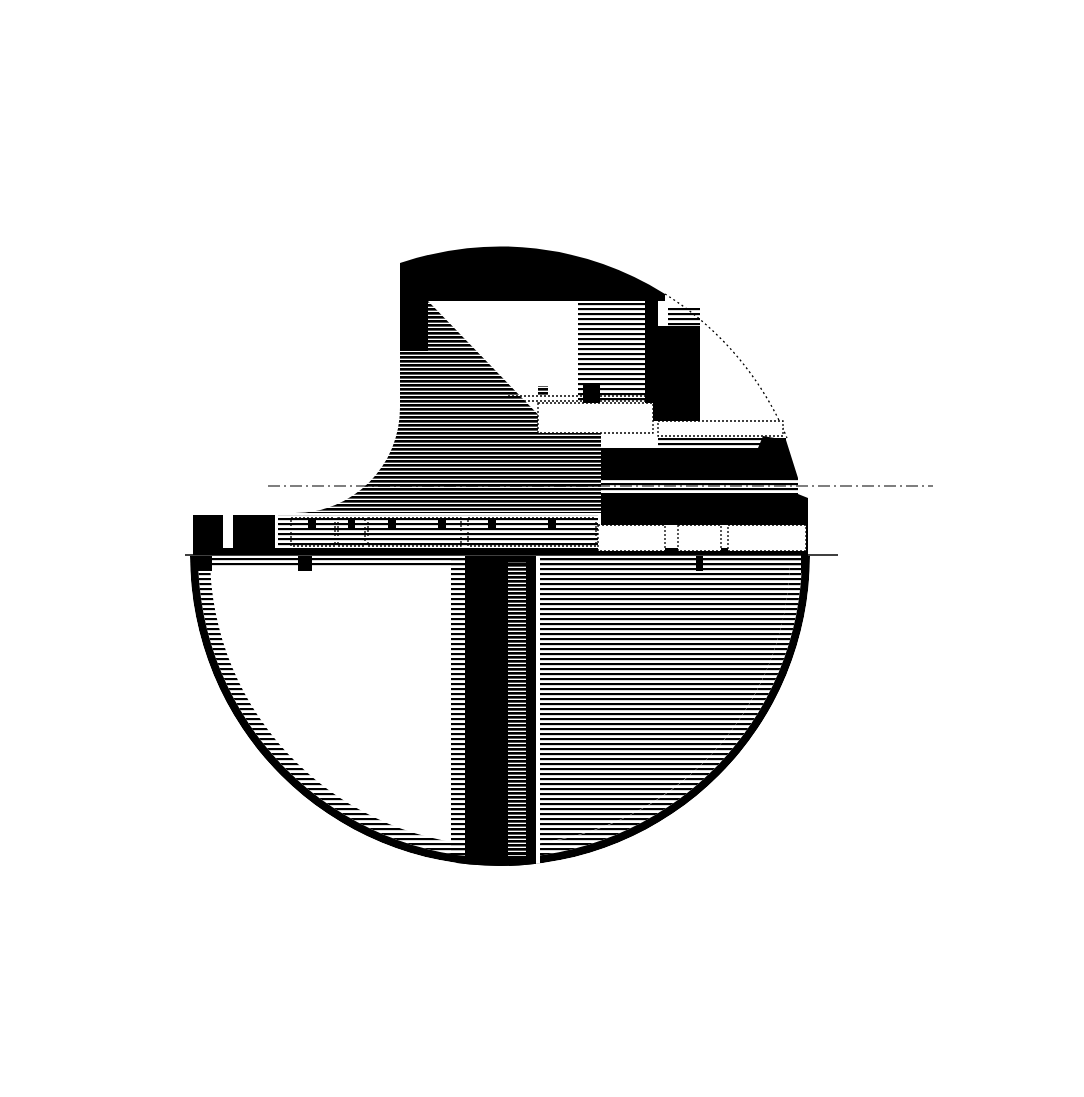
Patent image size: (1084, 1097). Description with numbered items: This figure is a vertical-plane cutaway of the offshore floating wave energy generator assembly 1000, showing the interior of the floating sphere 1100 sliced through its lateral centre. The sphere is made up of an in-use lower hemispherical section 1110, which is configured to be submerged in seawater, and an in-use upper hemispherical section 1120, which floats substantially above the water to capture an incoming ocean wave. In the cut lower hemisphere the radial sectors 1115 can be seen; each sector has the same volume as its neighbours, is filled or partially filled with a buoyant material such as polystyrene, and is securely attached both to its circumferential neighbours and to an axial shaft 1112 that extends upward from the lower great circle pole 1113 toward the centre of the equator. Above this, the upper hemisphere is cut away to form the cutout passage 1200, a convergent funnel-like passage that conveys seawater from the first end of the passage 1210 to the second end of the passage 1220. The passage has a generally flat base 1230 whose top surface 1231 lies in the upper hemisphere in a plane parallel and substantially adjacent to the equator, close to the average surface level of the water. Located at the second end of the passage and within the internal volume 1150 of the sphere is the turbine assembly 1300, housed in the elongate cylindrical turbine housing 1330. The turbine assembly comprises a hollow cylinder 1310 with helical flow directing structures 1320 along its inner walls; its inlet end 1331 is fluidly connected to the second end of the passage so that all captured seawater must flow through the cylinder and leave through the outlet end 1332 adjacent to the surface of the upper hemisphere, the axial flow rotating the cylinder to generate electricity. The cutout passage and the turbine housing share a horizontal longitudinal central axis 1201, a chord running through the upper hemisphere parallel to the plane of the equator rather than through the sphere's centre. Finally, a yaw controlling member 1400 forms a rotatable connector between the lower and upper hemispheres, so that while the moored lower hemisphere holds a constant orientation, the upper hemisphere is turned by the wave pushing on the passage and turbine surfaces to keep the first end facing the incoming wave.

The offshore floating wave energy generator assembly 1000 is at (515, 213).
The floating sphere 1100 is at (667, 263).
The lower hemispherical section 1110 is at (800, 665).
The axial shaft 1112 is at (525, 835).
The lower great circle pole 1113 is at (478, 863).
The radial sector 1115 is at (668, 762).
The upper hemispherical section 1120 is at (405, 235).
The internal volume 1150 is at (705, 362).
The cutout passage 1200 is at (271, 347).
The longitudinal central axis 1201 is at (260, 475).
The first end of the passage 1210 is at (390, 318).
The second end of the passage 1220 is at (588, 445).
The flat base 1230 is at (180, 518).
The top surface 1231 is at (240, 505).
The turbine assembly 1300 is at (775, 404).
The hollow cylinder 1310 is at (775, 453).
The helical flow directing structures 1320 is at (777, 462).
The turbine housing 1330 is at (775, 428).
The inlet end 1331 is at (600, 445).
The outlet end 1332 is at (800, 490).
The yaw controlling member 1400 is at (177, 547).